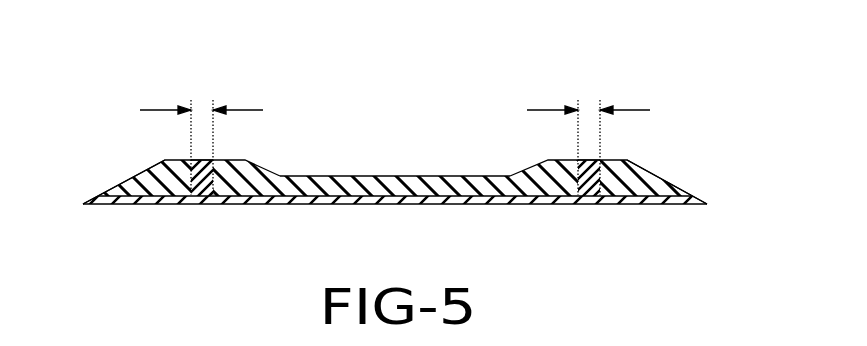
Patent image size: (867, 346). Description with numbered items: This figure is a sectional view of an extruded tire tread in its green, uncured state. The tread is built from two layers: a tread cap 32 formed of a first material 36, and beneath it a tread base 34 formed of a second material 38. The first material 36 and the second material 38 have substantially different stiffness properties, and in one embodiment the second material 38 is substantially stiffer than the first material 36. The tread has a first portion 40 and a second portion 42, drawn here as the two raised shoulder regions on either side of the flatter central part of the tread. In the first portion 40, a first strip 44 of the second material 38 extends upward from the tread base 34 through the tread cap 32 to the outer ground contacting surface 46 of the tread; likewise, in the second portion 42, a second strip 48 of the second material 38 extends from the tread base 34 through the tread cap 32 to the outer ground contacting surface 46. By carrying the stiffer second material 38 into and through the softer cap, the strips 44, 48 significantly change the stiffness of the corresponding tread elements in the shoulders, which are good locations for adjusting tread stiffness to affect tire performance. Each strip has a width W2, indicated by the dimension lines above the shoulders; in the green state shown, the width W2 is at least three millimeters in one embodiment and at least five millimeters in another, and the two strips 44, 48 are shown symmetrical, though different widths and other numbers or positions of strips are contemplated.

The tread cap 32 is at (327, 182).
The tread base 34 is at (330, 199).
The first material 36 is at (448, 182).
The second material 38 is at (457, 200).
The first portion 40 is at (118, 104).
The second portion 42 is at (675, 105).
The first strip 44 is at (213, 161).
The outer ground contacting surface 46 is at (158, 163).
The second strip 48 is at (578, 161).
The width of the strips W2 is at (203, 106).